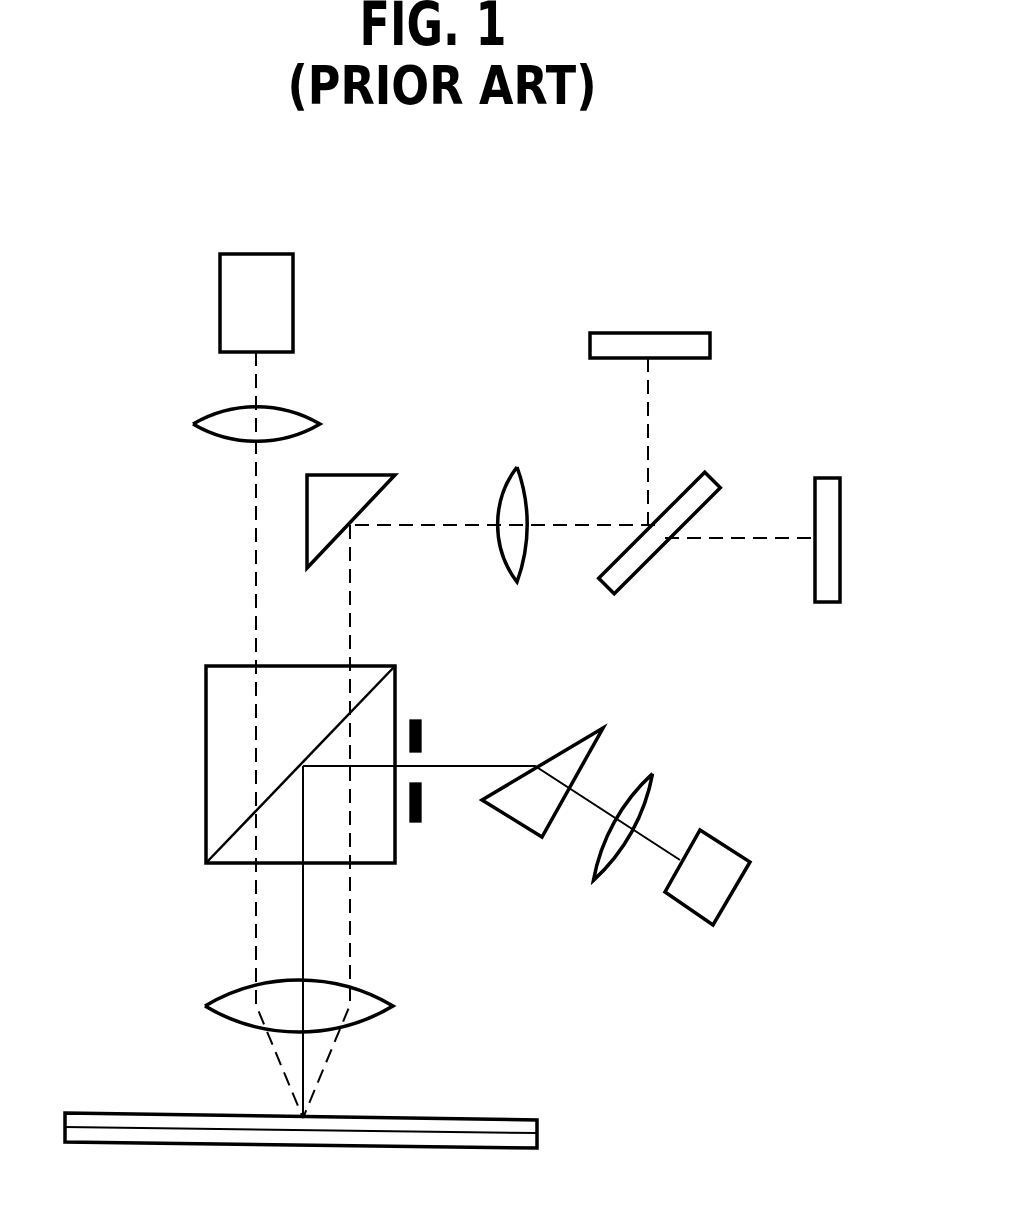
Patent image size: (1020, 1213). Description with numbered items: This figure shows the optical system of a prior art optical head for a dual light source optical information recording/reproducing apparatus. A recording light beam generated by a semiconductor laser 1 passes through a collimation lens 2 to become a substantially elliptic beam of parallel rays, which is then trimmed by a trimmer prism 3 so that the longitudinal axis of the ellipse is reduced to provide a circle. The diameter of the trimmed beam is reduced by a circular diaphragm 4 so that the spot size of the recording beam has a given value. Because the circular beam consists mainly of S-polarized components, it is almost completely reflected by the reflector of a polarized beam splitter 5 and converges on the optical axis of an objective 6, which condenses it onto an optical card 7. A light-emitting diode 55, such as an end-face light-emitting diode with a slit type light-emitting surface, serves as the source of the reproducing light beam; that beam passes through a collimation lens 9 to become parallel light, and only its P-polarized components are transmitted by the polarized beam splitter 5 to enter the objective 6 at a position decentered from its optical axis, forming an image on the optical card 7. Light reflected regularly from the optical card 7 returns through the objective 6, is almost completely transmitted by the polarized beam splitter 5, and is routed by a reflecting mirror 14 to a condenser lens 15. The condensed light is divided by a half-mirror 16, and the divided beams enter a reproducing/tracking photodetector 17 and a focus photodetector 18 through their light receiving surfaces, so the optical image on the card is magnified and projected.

The semiconductor laser 1 is at (727, 838).
The collimation lens 2 is at (658, 775).
The beam shaping prism 3 is at (567, 743).
The circular diaphragm 4 is at (421, 735).
The polarized beam splitter 5 is at (206, 718).
The objective 6 is at (225, 990).
The optical card 7 is at (163, 1113).
The collimation lens 9 is at (205, 416).
The reflecting mirror 14 is at (355, 475).
The condenser lens 15 is at (506, 466).
The half-mirror 16 is at (690, 467).
The reproducing/tracking photodetector 17 is at (842, 502).
The focus photodetector 18 is at (690, 332).
The light-emitting diode 55 is at (220, 318).